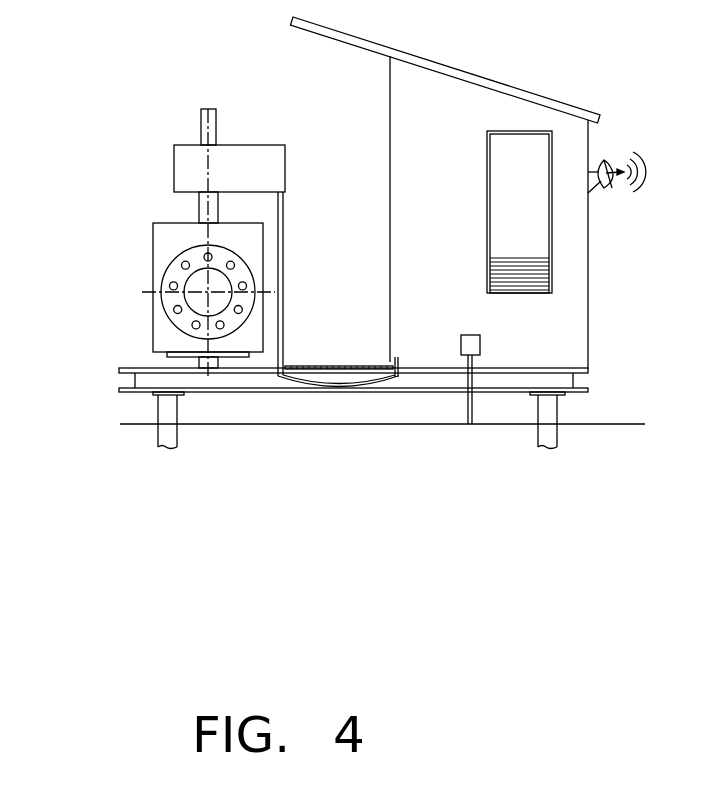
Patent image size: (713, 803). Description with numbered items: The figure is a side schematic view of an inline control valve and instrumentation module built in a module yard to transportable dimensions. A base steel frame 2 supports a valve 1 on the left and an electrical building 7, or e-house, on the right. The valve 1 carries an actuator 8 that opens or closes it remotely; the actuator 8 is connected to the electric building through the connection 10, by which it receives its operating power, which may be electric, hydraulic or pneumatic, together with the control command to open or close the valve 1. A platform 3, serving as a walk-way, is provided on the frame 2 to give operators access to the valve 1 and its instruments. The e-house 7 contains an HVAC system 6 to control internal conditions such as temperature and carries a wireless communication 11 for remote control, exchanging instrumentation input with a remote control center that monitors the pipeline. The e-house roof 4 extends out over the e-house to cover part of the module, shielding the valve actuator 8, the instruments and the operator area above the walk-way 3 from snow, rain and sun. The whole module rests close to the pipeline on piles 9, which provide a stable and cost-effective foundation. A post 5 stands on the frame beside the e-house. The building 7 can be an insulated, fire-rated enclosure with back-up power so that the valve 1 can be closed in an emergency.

The valve 1 is at (162, 243).
The base steel frame 2 is at (133, 368).
The platform 3 is at (318, 365).
The E-house roof 4 is at (332, 35).
The sensor post 5 is at (462, 336).
The HVAC system 6 is at (495, 210).
The electrical building 7 is at (475, 108).
The actuator 8 is at (272, 165).
The piles 9 is at (170, 420).
The electric building connection 10 is at (284, 252).
The wireless communication 11 is at (605, 185).